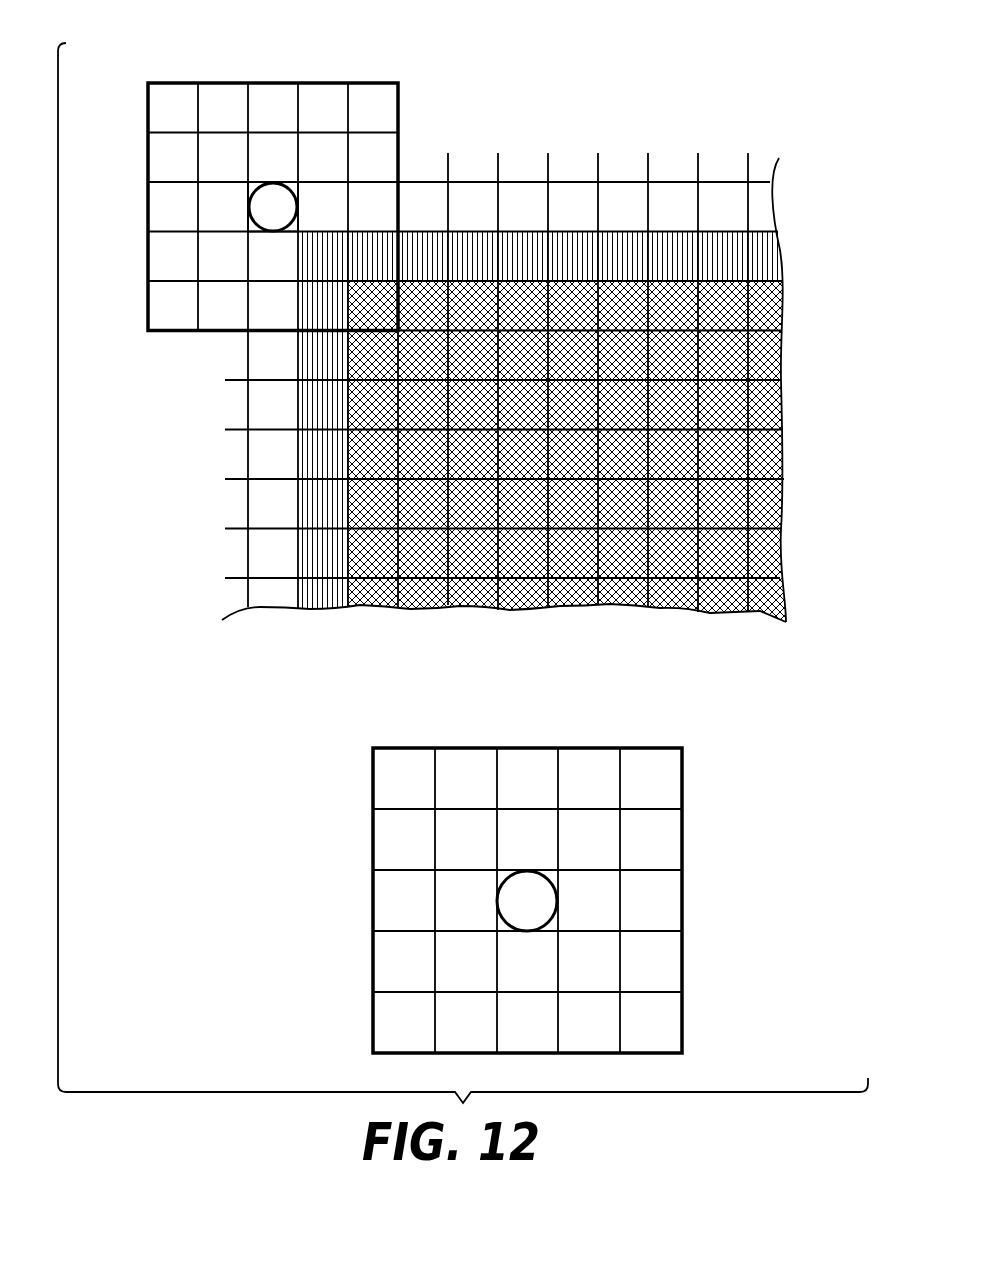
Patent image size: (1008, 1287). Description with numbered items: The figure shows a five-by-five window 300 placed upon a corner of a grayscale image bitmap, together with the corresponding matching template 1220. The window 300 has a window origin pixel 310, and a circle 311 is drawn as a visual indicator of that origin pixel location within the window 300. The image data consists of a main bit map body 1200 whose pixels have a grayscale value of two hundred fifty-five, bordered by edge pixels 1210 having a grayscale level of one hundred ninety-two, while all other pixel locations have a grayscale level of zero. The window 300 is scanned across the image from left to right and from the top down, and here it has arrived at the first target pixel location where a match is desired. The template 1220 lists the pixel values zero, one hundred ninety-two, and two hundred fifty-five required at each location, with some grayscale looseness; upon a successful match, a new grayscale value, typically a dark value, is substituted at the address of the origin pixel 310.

The window 300 is at (148, 113).
The window origin pixel 310 is at (273, 202).
The circle 311 is at (272, 183).
The main bit map body 1200 is at (508, 367).
The edge pixels 1210 is at (718, 237).
The template 1220 is at (598, 748).